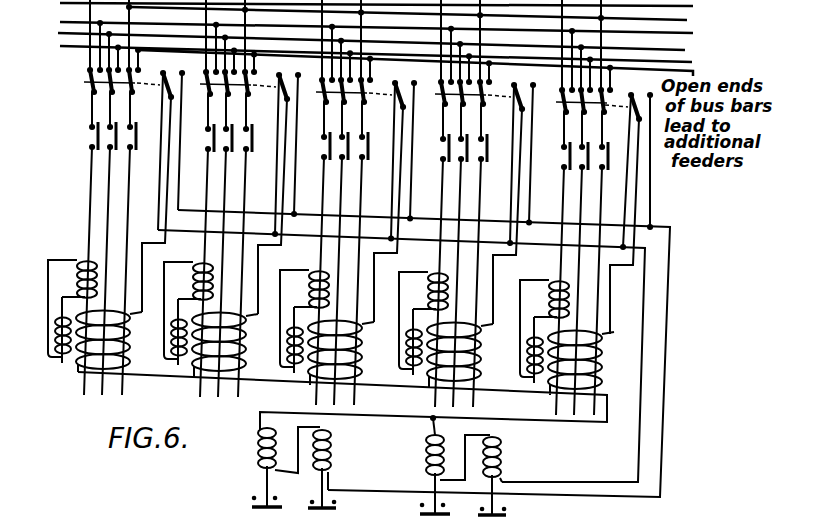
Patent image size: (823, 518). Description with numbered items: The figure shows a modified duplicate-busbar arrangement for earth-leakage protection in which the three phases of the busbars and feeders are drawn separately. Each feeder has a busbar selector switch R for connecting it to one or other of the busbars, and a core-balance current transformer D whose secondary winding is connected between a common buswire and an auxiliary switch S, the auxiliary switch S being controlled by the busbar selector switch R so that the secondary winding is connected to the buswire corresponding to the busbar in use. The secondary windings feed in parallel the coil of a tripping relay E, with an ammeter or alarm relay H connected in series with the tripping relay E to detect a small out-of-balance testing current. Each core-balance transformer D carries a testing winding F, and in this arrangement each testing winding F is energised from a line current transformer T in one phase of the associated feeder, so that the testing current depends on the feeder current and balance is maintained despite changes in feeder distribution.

The busbar selector switch R is at (334, 103).
The auxiliary switch S is at (393, 107).
The current transformer T is at (314, 275).
The core-balance current transformer D is at (349, 352).
The auxiliary winding F is at (291, 355).
The alarm relay H is at (428, 460).
The tripping relay E is at (503, 457).